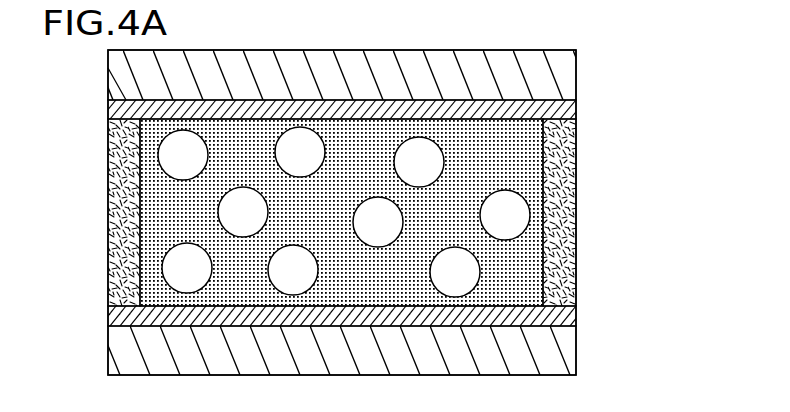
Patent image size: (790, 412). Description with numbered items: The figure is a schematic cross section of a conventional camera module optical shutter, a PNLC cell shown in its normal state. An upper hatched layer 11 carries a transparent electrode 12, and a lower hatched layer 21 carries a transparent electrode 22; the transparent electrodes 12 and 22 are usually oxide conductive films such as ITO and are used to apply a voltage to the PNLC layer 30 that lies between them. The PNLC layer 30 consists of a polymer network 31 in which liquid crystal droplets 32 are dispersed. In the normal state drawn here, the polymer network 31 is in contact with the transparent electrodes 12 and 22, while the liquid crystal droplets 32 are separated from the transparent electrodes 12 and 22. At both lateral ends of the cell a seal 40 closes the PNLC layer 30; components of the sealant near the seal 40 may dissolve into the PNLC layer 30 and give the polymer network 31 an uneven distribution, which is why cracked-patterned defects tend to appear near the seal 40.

The first substrate 11 is at (108, 71).
The transparent electrode 12 is at (110, 110).
The second substrate 21 is at (113, 350).
The transparent electrode 22 is at (112, 317).
The PNLC layer 30 is at (422, 212).
The polymer network 31 is at (513, 158).
The liquid crystal droplets 32 is at (655, 136).
The seal 40 is at (110, 208).